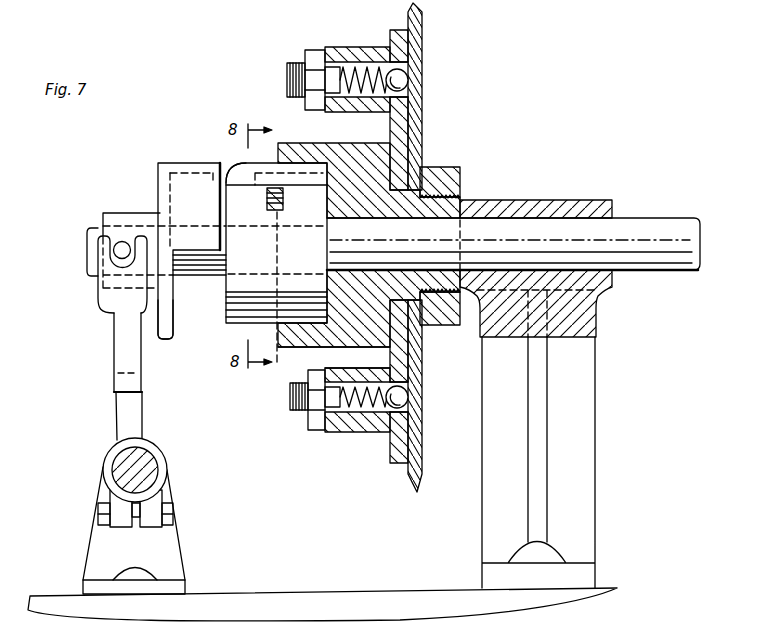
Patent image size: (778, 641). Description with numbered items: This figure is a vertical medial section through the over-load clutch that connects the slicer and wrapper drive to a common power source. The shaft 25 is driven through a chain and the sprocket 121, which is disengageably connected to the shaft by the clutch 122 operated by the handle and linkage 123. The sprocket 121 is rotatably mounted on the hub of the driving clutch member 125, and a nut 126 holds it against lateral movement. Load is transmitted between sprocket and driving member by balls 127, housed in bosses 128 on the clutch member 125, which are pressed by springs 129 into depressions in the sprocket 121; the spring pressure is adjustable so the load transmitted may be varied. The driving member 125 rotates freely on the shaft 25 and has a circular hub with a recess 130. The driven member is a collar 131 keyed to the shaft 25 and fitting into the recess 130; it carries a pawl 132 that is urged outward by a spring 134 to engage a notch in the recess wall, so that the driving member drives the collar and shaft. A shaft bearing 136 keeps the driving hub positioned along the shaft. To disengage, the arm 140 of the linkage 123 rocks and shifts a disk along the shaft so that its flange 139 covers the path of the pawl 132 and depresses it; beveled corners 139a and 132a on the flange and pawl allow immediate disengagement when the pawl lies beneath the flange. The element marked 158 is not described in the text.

The shaft 25 is at (657, 227).
The sprocket 121 is at (420, 92).
The clutch 122 is at (288, 350).
The handle and linkage 123 is at (115, 418).
The driving clutch member 125 is at (384, 176).
The nut 126 is at (452, 182).
The balls 127 is at (403, 73).
The bosses 128 is at (347, 47).
The springs 129 is at (363, 95).
The recess 130 is at (334, 357).
The collar 131 is at (276, 250).
The pawl 132 is at (250, 196).
The beveled corner of pawl 132a is at (232, 174).
The spring 134 is at (283, 200).
The shaft bearing 136 is at (600, 290).
The flange 139 is at (192, 167).
The beveled corner of flange 139a is at (212, 175).
The arm 140 is at (120, 338).
The arm 158 is at (170, 342).